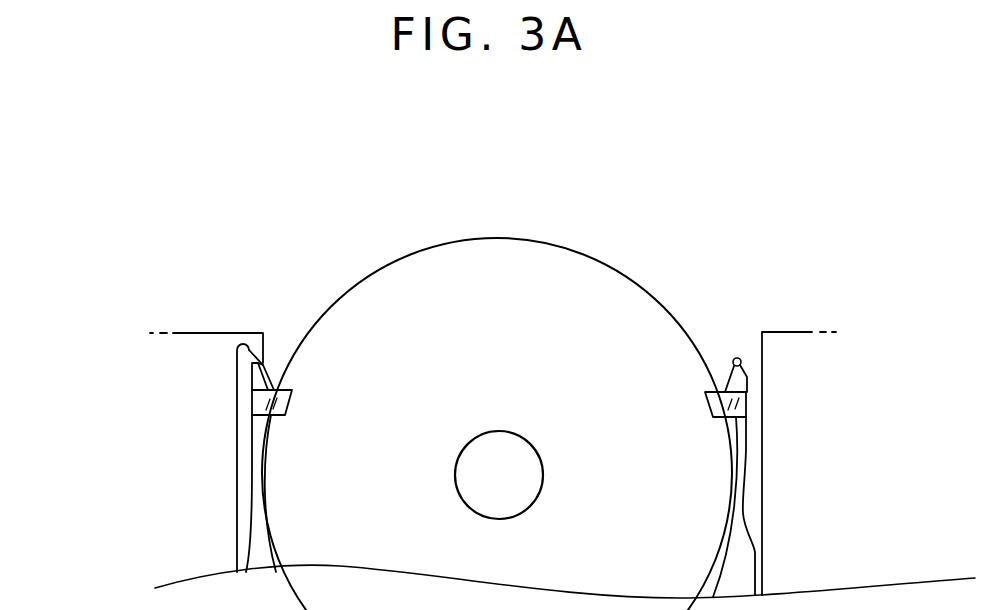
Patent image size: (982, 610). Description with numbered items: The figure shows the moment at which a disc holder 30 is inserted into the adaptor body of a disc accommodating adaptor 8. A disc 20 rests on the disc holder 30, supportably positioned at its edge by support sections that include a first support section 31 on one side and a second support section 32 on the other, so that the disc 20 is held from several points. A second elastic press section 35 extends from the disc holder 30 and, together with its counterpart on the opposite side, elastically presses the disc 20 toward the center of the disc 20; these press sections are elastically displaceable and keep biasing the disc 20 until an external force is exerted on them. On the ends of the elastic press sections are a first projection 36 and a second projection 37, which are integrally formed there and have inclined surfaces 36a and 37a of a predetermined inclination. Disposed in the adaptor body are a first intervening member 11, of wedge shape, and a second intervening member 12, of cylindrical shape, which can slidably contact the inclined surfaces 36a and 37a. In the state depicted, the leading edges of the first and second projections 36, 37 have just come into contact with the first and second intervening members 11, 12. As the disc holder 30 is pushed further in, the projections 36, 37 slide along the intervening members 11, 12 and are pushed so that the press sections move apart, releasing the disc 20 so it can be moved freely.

The disc accommodating adaptor 8 is at (65, 455).
The first intervening member 11 is at (258, 351).
The second intervening member 12 is at (737, 357).
The disc 20 is at (461, 230).
The disc holder 30 is at (247, 556).
The first support section 31 is at (293, 408).
The second support section 32 is at (703, 398).
The second elastic press section 35 is at (743, 513).
The first projection 36 is at (258, 378).
The inclined surface 36a is at (272, 389).
The second projection 37 is at (747, 378).
The inclined surface 37a is at (733, 362).